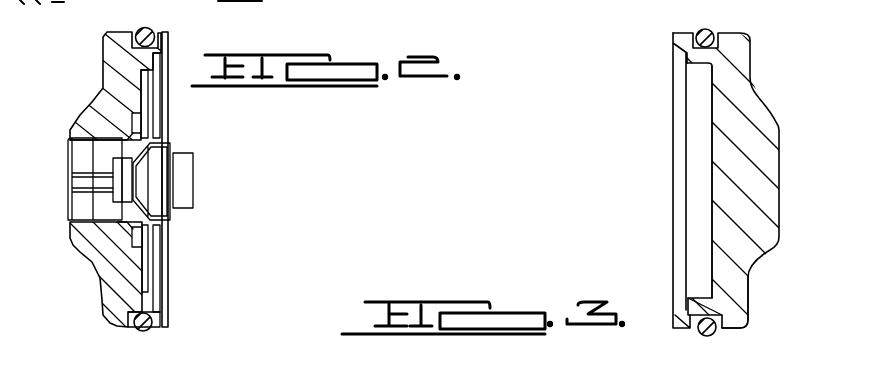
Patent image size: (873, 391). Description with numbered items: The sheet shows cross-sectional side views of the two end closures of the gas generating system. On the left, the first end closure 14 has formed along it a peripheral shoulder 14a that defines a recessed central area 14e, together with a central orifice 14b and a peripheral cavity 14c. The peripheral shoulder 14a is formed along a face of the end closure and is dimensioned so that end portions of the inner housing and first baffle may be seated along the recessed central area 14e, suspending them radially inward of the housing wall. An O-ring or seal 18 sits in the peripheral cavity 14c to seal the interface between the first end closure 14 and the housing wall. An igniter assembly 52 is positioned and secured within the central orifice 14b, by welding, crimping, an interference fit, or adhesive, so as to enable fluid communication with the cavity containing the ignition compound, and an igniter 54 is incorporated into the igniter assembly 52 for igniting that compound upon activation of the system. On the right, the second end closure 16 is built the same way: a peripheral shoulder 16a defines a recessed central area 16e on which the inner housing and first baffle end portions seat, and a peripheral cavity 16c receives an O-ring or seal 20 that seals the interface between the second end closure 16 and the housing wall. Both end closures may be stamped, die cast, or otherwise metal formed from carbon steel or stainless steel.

In FIG. 2, the first end closure 14 is at (110, 257).
In FIG. 2, the peripheral shoulder 14a is at (170, 327).
In FIG. 2, the central orifice 14b is at (68, 210).
In FIG. 2, the peripheral cavity 14c is at (128, 313).
In FIG. 2, the recessed central area 14e is at (147, 262).
In FIG. 2, the O-ring or seal 18 is at (138, 340).
In FIG. 2, the igniter assembly 52 is at (102, 158).
In FIG. 2, the igniter 54 is at (185, 178).
In FIG. 3, the second end closure 16 is at (751, 126).
In FIG. 3, the peripheral shoulder 16a is at (673, 41).
In FIG. 3, the recessed central area 16e is at (712, 231).
In FIG. 3, the peripheral cavity 16c is at (723, 313).
In FIG. 3, the O-ring or seal 20 is at (705, 338).